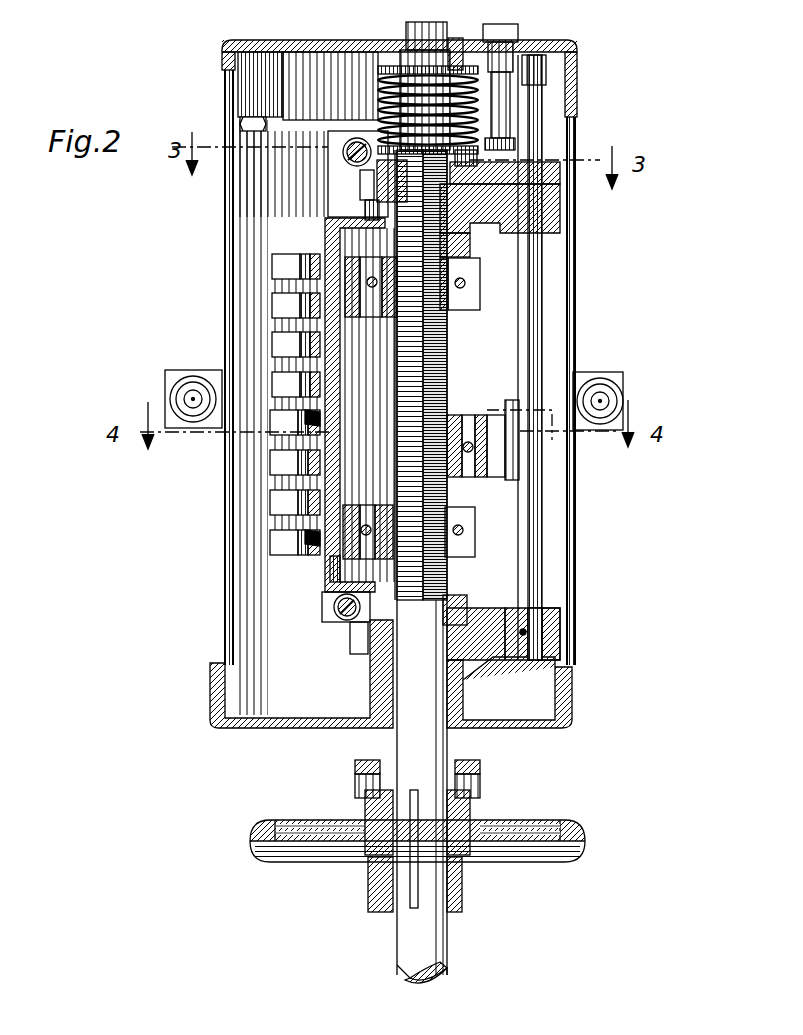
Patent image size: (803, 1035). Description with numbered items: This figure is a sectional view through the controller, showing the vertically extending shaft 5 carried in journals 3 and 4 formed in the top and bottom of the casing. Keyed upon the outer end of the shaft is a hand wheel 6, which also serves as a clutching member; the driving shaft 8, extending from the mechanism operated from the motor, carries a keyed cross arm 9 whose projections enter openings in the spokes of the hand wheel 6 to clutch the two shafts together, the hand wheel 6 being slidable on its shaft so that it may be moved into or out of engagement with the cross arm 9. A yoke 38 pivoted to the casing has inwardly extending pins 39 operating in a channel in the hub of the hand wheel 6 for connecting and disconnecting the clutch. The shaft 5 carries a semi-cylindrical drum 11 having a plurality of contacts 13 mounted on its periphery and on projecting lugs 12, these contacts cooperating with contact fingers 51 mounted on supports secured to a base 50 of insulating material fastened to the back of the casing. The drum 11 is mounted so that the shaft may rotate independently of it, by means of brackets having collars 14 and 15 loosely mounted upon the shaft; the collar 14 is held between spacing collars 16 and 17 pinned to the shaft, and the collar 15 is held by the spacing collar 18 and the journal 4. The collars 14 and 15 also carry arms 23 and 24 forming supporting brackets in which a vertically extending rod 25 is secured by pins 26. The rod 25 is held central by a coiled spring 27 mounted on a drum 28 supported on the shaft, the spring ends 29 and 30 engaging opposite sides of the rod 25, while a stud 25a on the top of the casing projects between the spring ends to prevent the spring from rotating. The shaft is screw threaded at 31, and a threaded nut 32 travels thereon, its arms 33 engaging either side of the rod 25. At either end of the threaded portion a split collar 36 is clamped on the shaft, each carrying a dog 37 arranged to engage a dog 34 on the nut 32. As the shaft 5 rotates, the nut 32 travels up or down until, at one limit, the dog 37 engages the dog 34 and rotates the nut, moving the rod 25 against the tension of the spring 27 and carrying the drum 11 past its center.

The journal 3 is at (458, 56).
The journal 4 is at (466, 695).
The shaft 5 is at (415, 738).
The hand wheel 6 is at (556, 832).
The driving shaft 8 is at (428, 950).
The cross arm 9 is at (370, 900).
The semi-cylindrical drum 11 is at (332, 228).
The projecting lugs 12 is at (320, 425).
The contacts 13 is at (306, 534).
The collar 14 is at (487, 184).
The collar 15 is at (470, 630).
The spacing collar 16 is at (493, 144).
The spacing collar 17 is at (455, 244).
The spacing collar 18 is at (462, 596).
The arm 23 is at (555, 205).
The arm 24 is at (548, 632).
The rod 25 is at (532, 305).
The stud 25a is at (510, 50).
The pins 26 is at (522, 642).
The coiled spring 27 is at (385, 88).
The drum 28 is at (444, 48).
The end of coiled spring 29 is at (548, 82).
The end of coiled spring 30 is at (470, 160).
The screw threaded portion 31 is at (455, 358).
The threaded nut 32 is at (458, 415).
The arms 33 is at (512, 478).
The dog 34 is at (496, 412).
The split collar 36 is at (470, 283).
The dog 37 is at (366, 262).
The yoke 38 is at (356, 766).
The pins 39 is at (356, 786).
The base 50 is at (340, 622).
The contact fingers 51 is at (288, 296).